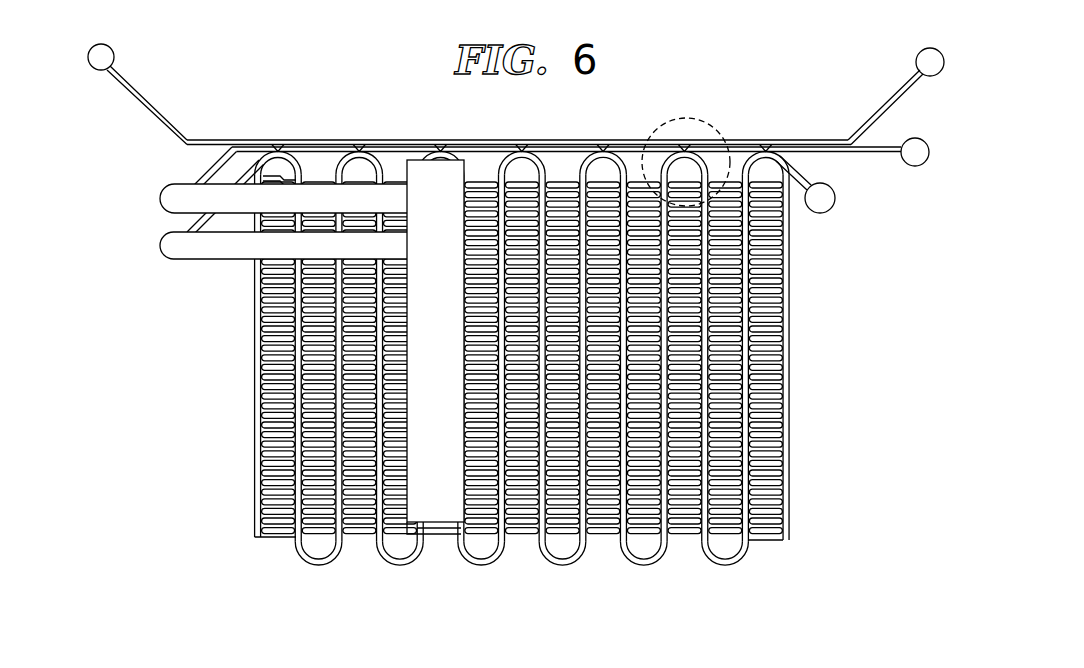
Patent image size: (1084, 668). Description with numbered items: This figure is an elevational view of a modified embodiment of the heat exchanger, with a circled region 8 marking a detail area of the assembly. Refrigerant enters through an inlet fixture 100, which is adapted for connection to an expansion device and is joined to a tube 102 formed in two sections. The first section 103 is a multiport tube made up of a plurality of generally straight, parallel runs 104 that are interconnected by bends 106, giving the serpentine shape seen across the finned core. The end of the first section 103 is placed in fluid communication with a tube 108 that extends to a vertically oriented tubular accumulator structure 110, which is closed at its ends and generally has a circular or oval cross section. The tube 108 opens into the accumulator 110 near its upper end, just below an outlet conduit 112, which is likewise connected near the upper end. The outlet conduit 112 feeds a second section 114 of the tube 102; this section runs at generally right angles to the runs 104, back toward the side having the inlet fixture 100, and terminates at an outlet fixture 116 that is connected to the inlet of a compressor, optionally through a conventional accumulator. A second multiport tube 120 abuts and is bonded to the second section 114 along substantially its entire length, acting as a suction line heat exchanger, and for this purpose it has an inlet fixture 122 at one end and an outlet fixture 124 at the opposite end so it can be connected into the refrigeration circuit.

The detail region 8 is at (692, 118).
The inlet fixture 100 is at (833, 210).
The tube 102 is at (745, 557).
The first section 103 is at (492, 566).
The runs 104 is at (750, 370).
The bends 106 is at (575, 167).
The tube 108 is at (207, 250).
The tubular accumulator structure 110 is at (430, 180).
The outlet conduit 112 is at (313, 203).
The second section 114 is at (196, 170).
The outlet fixture 116 is at (913, 166).
The second multiport tube 120 is at (206, 138).
The inlet fixture 122 is at (917, 61).
The outlet fixture 124 is at (112, 47).